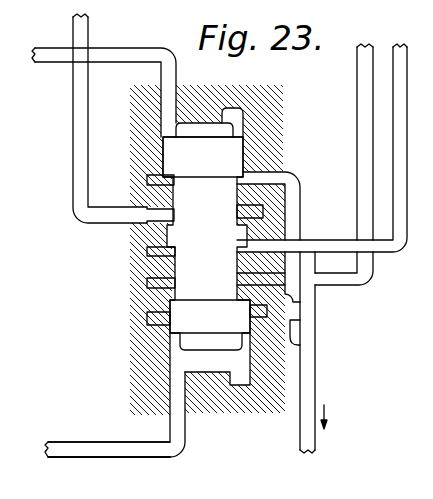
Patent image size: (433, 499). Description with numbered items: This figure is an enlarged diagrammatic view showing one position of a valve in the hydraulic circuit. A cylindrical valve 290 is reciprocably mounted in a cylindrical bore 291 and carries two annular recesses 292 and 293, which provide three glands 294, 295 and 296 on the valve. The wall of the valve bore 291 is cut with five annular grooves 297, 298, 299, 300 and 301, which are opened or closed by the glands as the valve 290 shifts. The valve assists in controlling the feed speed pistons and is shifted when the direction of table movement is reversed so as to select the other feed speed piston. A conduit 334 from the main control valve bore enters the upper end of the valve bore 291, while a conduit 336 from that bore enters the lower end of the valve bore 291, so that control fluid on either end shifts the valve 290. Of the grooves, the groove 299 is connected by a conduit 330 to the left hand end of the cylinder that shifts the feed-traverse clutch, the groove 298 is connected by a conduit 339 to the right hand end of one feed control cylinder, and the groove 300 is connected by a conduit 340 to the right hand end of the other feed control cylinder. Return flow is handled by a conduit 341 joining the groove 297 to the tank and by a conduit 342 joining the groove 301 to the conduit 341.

The cylindrical valve 290 is at (237, 141).
The cylindrical bore 291 is at (245, 143).
The annular recess 292 is at (266, 186).
The annular recess 293 is at (149, 271).
The gland 294 is at (165, 154).
The gland 295 is at (149, 239).
The gland 296 is at (170, 336).
The annular groove 297 is at (147, 180).
The annular groove 298 is at (263, 212).
The annular groove 299 is at (150, 251).
The annular groove 300 is at (148, 284).
The annular groove 301 is at (148, 318).
The conduit 330 is at (400, 140).
The conduit 334 is at (52, 41).
The conduit 336 is at (80, 433).
The conduit 339 is at (80, 32).
The conduit 340 is at (366, 160).
The conduit 341 is at (303, 338).
The conduit 342 is at (302, 343).